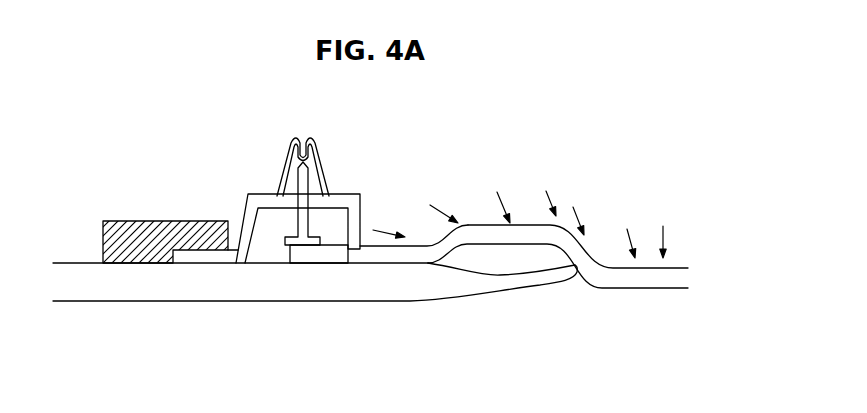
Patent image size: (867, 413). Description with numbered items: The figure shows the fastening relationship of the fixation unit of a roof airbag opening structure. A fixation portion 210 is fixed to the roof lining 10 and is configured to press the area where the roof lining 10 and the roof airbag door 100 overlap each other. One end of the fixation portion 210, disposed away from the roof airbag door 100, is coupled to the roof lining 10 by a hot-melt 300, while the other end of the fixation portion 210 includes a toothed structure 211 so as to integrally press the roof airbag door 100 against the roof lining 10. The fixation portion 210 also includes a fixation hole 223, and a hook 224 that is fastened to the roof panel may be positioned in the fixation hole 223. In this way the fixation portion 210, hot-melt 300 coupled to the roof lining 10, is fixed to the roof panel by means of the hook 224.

The roof lining 10 is at (152, 285).
The roof airbag door 100 is at (640, 275).
The fixation portion 210 is at (352, 200).
The toothed structure 211 is at (357, 255).
The fixation hole 223 is at (300, 203).
The hook 224 is at (288, 162).
The hot-melt 300 is at (148, 227).